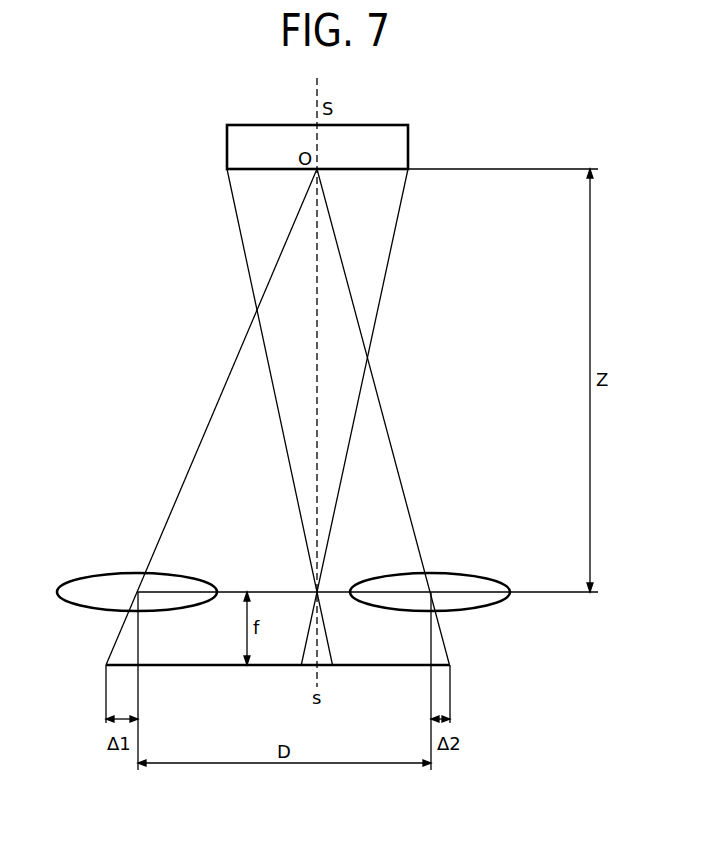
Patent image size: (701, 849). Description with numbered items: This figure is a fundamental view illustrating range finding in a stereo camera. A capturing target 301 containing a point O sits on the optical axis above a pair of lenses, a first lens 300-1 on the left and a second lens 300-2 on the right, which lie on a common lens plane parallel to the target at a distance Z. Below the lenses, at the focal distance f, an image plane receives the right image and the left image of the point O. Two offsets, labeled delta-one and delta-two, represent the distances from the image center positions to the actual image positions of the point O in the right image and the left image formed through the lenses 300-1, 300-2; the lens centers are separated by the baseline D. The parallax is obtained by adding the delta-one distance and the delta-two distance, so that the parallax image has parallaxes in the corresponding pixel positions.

The object (subject) 301 is at (395, 125).
The first lens (camera) 300-1 is at (98, 576).
The second lens (camera) 300-2 is at (493, 558).